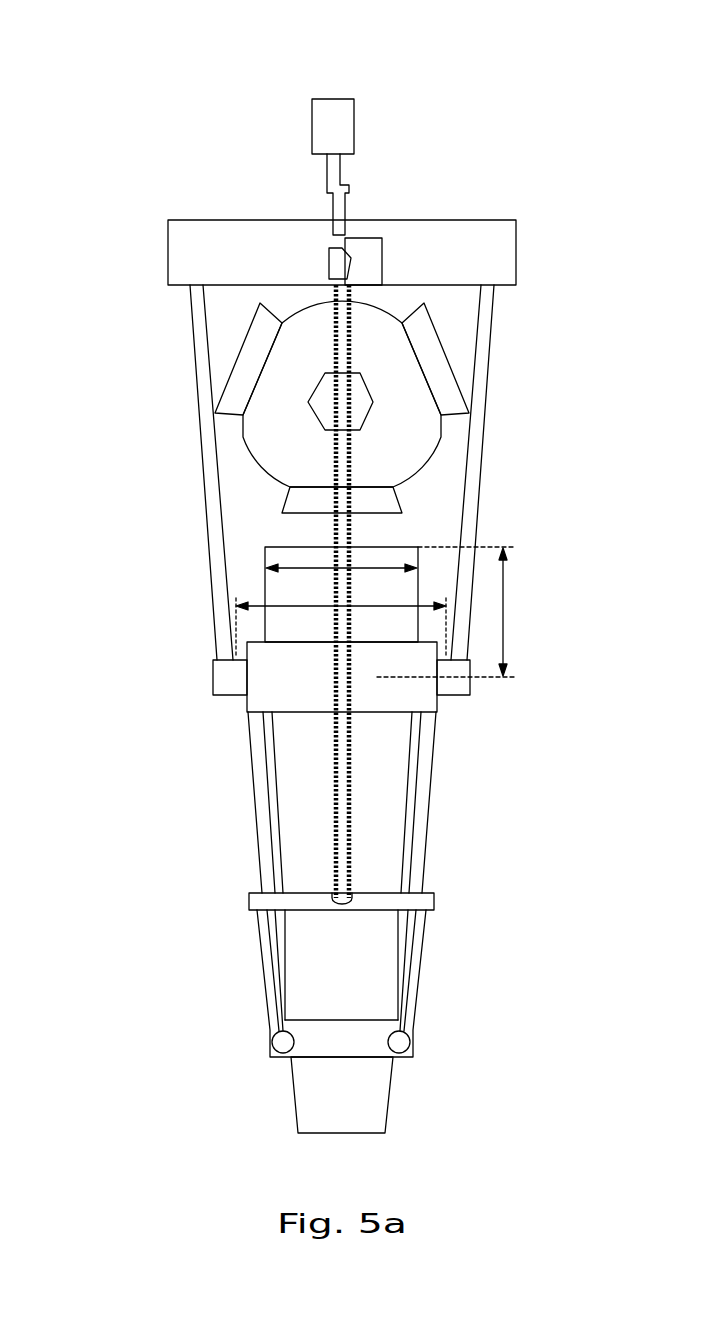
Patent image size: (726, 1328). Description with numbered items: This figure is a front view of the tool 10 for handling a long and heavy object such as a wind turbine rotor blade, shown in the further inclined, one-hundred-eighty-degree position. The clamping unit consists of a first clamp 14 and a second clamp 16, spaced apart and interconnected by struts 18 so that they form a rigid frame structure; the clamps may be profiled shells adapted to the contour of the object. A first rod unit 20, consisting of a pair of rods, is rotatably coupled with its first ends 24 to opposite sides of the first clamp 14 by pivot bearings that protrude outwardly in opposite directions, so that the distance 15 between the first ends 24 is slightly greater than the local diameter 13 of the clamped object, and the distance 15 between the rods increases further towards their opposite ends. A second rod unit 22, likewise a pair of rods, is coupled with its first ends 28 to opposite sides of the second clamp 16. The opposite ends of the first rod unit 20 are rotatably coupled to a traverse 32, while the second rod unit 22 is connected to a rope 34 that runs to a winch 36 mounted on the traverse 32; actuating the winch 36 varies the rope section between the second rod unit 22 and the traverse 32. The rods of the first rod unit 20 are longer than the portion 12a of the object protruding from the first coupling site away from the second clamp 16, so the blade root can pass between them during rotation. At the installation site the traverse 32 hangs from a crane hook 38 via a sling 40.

The tool 10 is at (566, 74).
The portion of the object 12a is at (470, 612).
The local diameter 13 is at (300, 567).
The first clamp 14 is at (300, 672).
The distance 15 is at (288, 602).
The second clamp 16 is at (355, 1045).
The strut 18 is at (262, 808).
The first rod unit 20 is at (200, 412).
The second rod unit 22 is at (250, 960).
The first end 24 is at (224, 664).
The first end 28 is at (267, 1038).
The traverse 32 is at (185, 258).
The rope 34 is at (353, 530).
The winch 36 is at (365, 245).
The hook 38 is at (343, 125).
The sling 40 is at (331, 207).